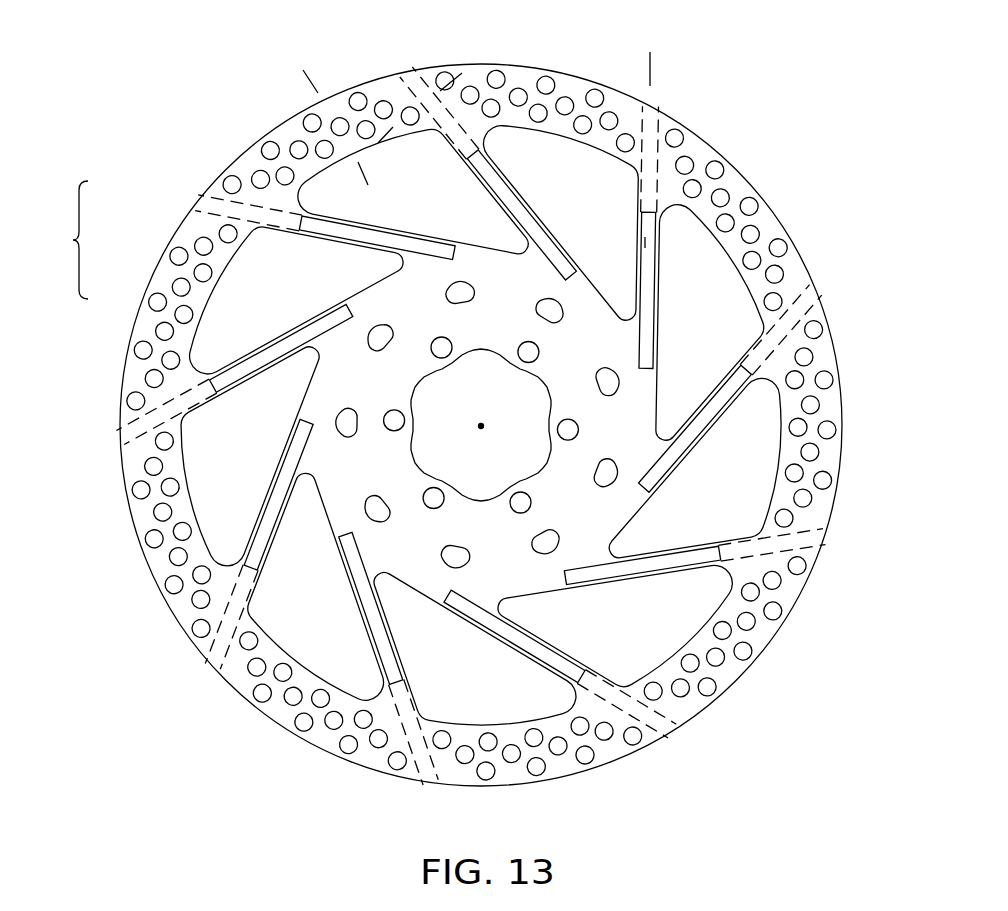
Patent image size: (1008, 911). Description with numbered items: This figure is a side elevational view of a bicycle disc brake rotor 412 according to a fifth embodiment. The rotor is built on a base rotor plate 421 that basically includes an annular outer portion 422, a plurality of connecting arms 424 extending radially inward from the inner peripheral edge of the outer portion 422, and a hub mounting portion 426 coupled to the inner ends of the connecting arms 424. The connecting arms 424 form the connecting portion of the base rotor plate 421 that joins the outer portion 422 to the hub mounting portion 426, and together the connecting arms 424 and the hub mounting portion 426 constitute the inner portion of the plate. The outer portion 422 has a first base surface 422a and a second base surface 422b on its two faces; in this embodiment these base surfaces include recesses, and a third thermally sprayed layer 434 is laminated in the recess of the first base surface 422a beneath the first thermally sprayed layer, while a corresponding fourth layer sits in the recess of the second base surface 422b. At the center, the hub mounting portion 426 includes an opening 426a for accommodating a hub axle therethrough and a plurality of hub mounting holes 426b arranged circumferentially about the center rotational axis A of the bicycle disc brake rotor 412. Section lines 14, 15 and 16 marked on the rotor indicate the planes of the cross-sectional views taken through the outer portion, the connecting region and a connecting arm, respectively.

The bicycle disc brake rotor 412 is at (479, 422).
The section line 14 is at (303, 70).
The section line 15 is at (393, 127).
The section line 16 is at (650, 52).
The base rotor plate 421 is at (59, 240).
The outer portion 422 is at (200, 223).
The first base surface 422a is at (744, 178).
The second base surface 422b is at (742, 263).
The connecting arms 424 is at (307, 418).
The hub mounting portion 426 is at (355, 423).
The opening 426a is at (548, 391).
The hub mounting holes 426b is at (436, 358).
The third thermally sprayed layer 434 is at (324, 327).
The center rotational axis A is at (481, 432).